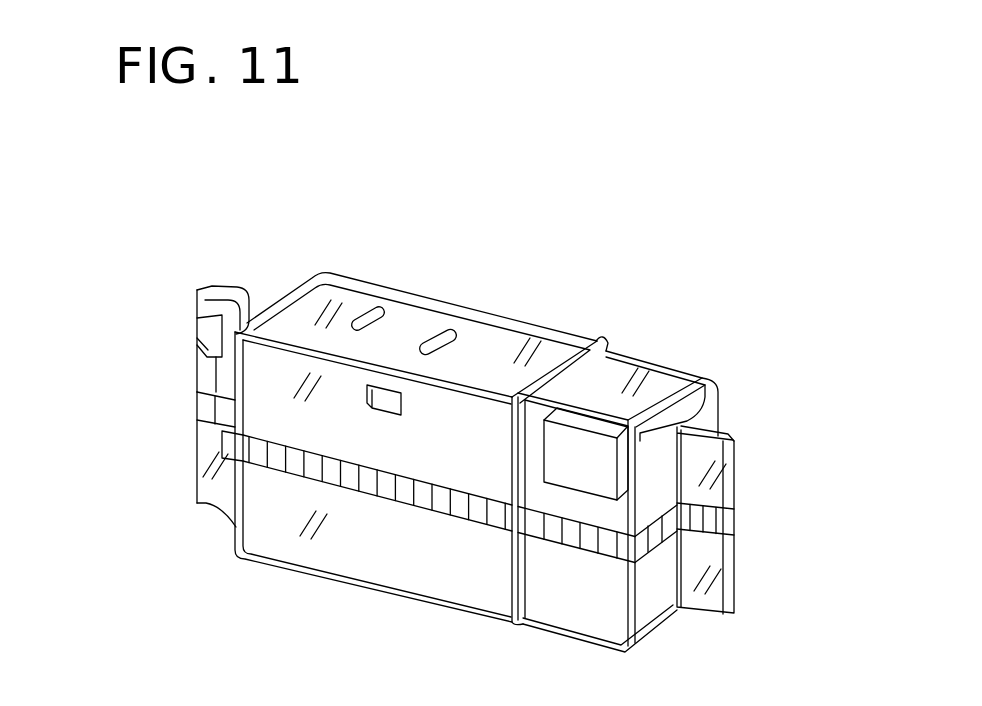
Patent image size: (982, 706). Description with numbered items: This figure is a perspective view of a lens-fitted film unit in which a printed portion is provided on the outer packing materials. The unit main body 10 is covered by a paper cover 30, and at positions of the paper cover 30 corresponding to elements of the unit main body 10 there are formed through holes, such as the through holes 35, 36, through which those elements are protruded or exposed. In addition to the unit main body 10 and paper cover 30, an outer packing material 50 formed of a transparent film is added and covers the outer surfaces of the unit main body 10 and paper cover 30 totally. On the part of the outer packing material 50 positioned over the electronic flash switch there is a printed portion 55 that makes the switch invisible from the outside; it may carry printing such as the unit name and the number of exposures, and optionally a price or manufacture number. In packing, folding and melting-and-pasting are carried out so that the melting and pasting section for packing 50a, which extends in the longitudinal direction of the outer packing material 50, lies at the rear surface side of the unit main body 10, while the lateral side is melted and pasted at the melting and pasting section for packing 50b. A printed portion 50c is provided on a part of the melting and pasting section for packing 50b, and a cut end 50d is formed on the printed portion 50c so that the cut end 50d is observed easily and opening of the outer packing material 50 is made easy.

The unit main body 10 is at (611, 477).
The paper cover 30 is at (416, 410).
The through hole 35 is at (452, 331).
The through hole 36 is at (373, 310).
The outer packing material 50 is at (327, 268).
The melting and pasting section for packing 50a is at (432, 500).
The melting and pasting section for packing 50b is at (228, 455).
The printed portion 50c is at (211, 326).
The cut end 50d is at (197, 347).
The printed portion 55 is at (553, 486).